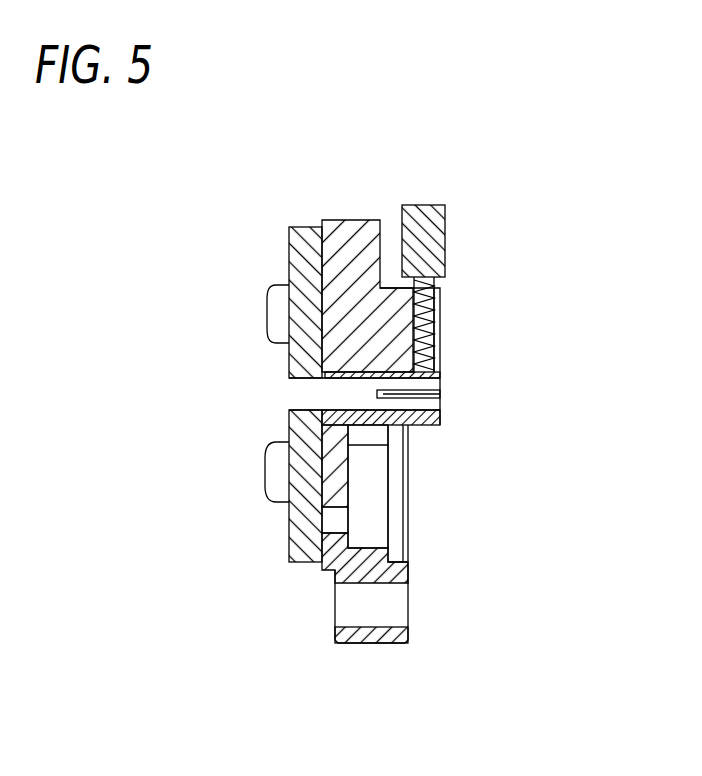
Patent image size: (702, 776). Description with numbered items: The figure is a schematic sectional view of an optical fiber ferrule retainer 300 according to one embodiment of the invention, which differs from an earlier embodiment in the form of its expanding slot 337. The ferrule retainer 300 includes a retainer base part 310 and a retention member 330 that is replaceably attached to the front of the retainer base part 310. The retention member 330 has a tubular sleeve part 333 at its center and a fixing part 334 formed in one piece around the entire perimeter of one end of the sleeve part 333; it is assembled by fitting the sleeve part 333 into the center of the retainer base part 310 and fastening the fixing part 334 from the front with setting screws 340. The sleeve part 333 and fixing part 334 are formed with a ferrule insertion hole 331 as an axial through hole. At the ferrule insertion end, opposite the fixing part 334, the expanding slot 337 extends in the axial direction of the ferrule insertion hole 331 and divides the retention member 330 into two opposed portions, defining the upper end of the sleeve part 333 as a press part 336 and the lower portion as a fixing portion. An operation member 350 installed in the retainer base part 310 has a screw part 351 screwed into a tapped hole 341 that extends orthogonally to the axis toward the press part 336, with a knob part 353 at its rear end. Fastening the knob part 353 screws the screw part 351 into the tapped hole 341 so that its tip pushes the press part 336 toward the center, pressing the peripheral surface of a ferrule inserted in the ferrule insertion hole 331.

The ferrule retainer 300 is at (233, 190).
The retention member 330 is at (300, 218).
The fixing part 334 is at (293, 262).
The setting screws 340 is at (277, 310).
The ferrule insertion hole 331 is at (300, 392).
The retainer base part 310 is at (357, 219).
The operation member 350 is at (452, 239).
The knob part 353 is at (437, 205).
The screw part 351 is at (438, 316).
The tapped hole 341 is at (432, 337).
The press part 336 is at (438, 386).
The expanding slot 337 is at (438, 394).
The sleeve part 333 is at (417, 427).